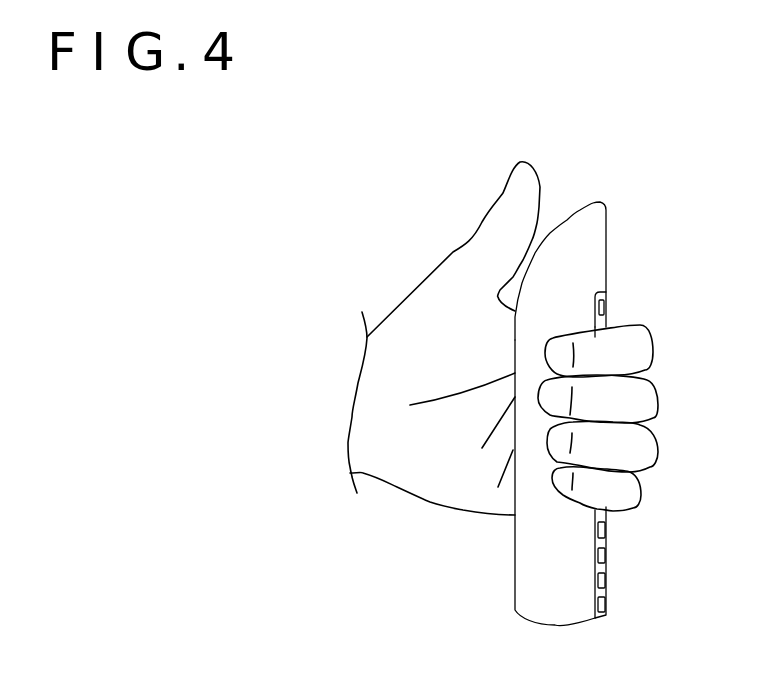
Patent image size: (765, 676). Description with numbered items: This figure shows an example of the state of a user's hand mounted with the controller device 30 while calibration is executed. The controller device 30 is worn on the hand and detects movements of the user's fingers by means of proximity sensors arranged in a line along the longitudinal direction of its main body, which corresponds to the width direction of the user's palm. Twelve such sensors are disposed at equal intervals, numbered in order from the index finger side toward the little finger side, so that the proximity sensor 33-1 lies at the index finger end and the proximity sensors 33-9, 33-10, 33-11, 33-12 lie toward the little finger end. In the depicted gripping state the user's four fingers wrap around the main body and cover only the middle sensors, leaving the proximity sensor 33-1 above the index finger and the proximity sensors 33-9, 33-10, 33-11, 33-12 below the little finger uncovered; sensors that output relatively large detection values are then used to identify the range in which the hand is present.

The controller device 30 is at (601, 189).
The proximity sensor 33-1 is at (606, 303).
The proximity sensor 33-9 is at (608, 530).
The proximity sensor 33-10 is at (608, 553).
The proximity sensor 33-11 is at (608, 580).
The proximity sensor 33-12 is at (608, 603).